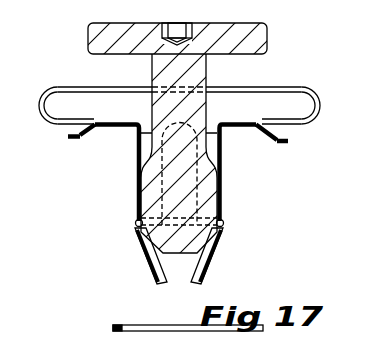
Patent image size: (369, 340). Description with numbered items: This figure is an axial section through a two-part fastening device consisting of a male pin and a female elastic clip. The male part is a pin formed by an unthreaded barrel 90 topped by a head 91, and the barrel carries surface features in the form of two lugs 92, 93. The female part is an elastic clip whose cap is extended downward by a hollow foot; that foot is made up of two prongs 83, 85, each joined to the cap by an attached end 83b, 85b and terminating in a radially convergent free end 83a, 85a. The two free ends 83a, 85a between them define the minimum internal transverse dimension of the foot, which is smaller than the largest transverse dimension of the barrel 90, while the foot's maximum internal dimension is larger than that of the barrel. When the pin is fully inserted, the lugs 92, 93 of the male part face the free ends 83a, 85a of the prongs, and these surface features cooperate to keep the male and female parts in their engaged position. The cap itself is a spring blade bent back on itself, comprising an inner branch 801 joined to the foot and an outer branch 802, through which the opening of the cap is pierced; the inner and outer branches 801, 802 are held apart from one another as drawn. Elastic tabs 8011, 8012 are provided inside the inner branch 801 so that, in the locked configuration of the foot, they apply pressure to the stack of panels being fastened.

The head 91 is at (88, 41).
The barrel 90 is at (207, 74).
The outer branch 802 is at (181, 191).
The inner branch 801 is at (236, 119).
The elastic tab 8011 is at (70, 139).
The elastic tab 8012 is at (283, 144).
The prong 83 is at (140, 192).
The free end 83a is at (158, 272).
The attached end 83b is at (137, 127).
The prong 85 is at (222, 188).
The free end 85a is at (212, 262).
The attached end 85b is at (222, 128).
The lug 92 is at (138, 232).
The lug 93 is at (224, 224).